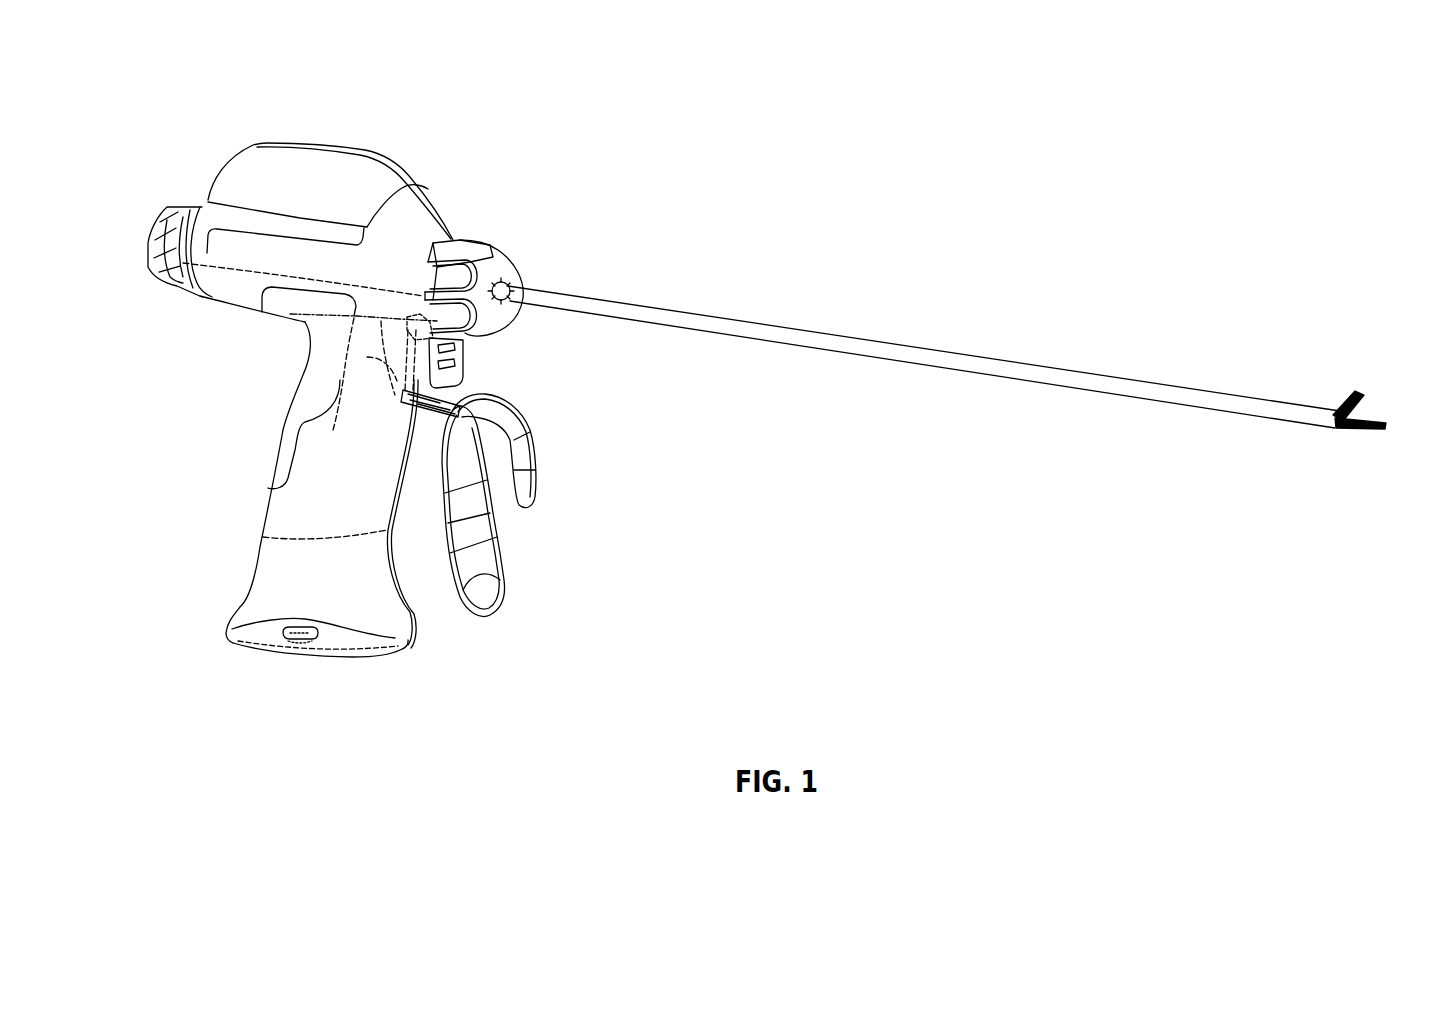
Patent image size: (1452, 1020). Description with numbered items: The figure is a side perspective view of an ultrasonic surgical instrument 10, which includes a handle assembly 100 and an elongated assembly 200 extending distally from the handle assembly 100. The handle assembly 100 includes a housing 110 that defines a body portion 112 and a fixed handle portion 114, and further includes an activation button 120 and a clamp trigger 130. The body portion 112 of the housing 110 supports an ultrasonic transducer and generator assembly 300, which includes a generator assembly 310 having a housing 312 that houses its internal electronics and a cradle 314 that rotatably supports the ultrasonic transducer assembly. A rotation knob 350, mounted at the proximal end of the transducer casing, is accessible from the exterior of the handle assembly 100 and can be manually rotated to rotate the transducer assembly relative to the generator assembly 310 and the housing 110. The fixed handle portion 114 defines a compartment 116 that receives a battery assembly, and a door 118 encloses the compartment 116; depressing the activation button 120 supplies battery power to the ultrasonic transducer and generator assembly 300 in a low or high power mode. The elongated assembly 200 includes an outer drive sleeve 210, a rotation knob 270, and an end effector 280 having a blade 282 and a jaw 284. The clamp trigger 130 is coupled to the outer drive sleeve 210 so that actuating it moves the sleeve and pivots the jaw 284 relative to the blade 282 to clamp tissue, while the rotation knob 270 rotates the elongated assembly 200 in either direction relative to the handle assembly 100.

The ultrasonic surgical instrument 10 is at (987, 171).
The handle assembly 100 is at (418, 673).
The housing 110 is at (284, 300).
The body portion 112 is at (416, 233).
The fixed handle portion 114 is at (296, 505).
The compartment 116 is at (275, 577).
The door 118 is at (277, 635).
The activation button 120 is at (460, 352).
The clamp trigger 130 is at (490, 582).
The elongated assembly 200 is at (797, 290).
The outer drive sleeve 210 is at (996, 364).
The rotation knob 270 is at (498, 266).
The end effector 280 is at (1395, 366).
The blade 282 is at (1365, 430).
The jaw 284 is at (1364, 394).
The ultrasonic transducer and generator assembly 300 is at (338, 120).
The generator assembly 310 is at (413, 154).
The housing 312 is at (296, 165).
The cradle 314 is at (191, 278).
The rotation knob 350 is at (157, 250).